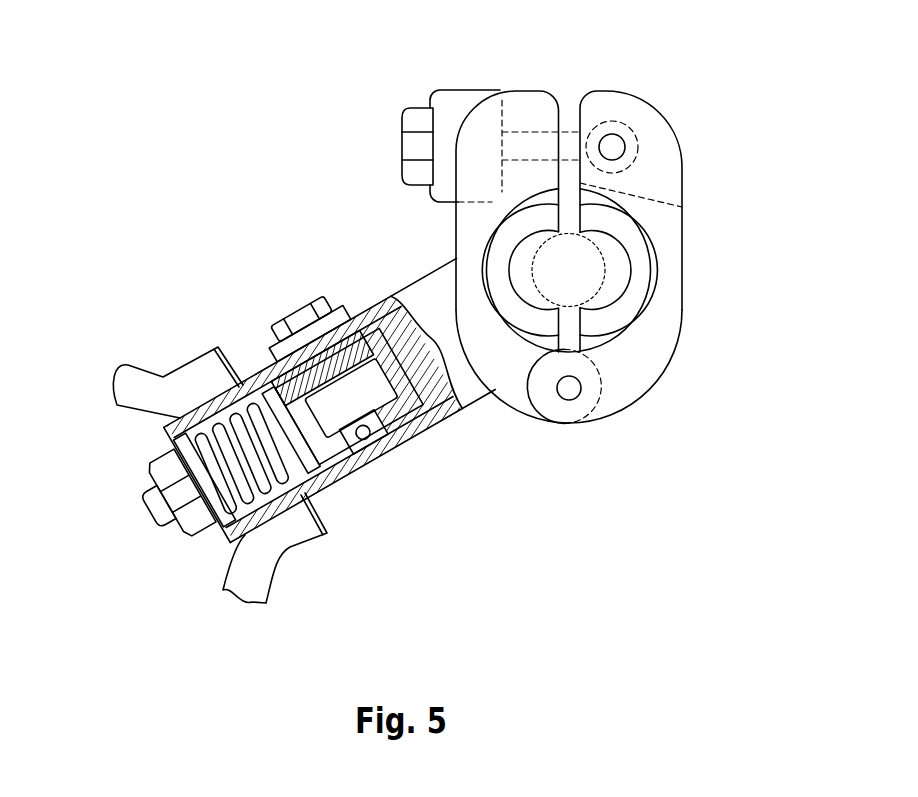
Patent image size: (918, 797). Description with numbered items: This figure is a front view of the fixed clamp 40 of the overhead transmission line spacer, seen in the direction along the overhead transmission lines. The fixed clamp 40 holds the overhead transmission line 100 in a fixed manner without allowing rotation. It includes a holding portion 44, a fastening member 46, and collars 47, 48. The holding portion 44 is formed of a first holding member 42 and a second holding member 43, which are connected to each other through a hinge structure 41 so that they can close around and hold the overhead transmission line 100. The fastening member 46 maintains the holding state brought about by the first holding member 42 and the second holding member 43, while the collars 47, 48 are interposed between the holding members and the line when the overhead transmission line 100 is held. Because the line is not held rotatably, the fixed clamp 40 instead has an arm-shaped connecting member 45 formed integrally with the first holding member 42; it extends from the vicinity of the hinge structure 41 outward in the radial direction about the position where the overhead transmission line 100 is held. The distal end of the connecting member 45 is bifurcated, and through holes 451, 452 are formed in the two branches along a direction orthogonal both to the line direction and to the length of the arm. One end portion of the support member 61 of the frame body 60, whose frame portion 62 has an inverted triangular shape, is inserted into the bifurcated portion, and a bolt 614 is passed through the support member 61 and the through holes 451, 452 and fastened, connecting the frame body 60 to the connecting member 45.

The fixed clamp 40 is at (333, 105).
The hinge structure 41 is at (577, 385).
The first holding member 42 is at (522, 392).
The second holding member 43 is at (665, 375).
The holding portion 44 is at (636, 426).
The connecting member 45 is at (410, 284).
The fastening member 46 is at (411, 108).
The collar 47 is at (518, 270).
The collar 48 is at (622, 268).
The overhead transmission line 100 is at (590, 252).
The frame body 60 is at (103, 528).
The support member 61 is at (312, 415).
The frame portion 62 is at (150, 370).
The bolt 614 is at (290, 302).
The through hole 451 is at (326, 358).
The through hole 452 is at (373, 447).